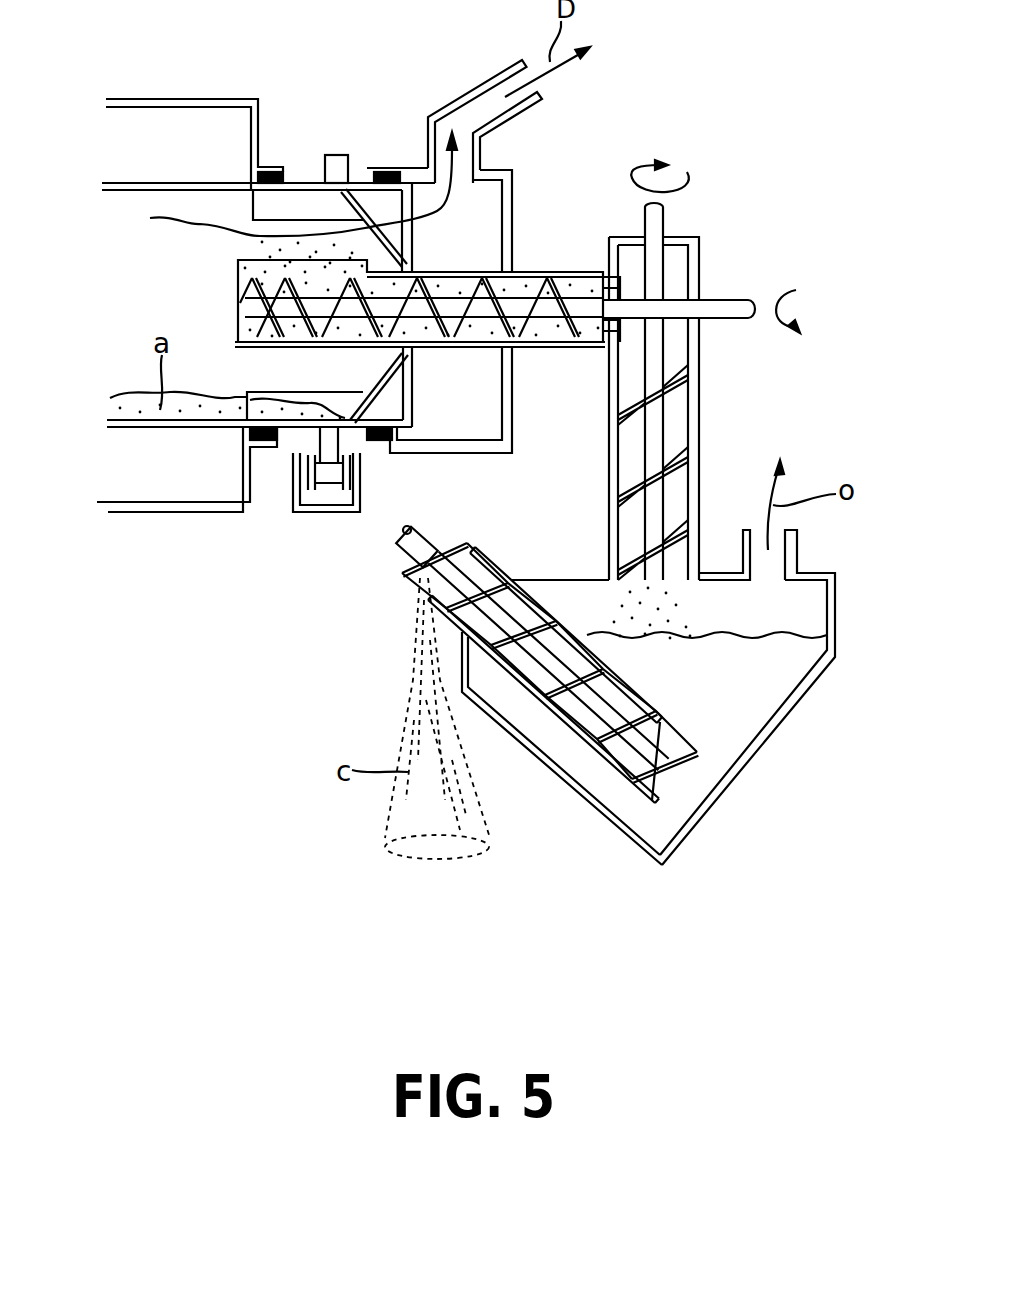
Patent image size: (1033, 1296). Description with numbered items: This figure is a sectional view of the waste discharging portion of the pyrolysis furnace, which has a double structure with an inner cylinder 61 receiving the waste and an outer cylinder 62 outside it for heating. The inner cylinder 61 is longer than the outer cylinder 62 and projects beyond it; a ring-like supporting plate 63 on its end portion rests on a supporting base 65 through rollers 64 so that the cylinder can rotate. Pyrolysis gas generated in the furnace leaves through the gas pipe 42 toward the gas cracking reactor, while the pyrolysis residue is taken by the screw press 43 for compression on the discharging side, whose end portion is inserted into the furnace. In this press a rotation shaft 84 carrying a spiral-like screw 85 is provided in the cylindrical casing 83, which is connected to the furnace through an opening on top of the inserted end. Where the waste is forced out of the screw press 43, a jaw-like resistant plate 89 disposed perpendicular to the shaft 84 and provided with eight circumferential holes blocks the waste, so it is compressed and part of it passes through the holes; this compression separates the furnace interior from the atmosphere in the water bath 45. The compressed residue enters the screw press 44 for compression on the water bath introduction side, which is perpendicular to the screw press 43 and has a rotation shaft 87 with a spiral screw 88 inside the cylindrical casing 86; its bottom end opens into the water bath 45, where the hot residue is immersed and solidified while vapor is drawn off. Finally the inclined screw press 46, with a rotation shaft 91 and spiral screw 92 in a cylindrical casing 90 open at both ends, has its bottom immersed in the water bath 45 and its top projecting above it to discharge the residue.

The gas pipe 42 is at (463, 95).
The screw press for compression on the discharging side 43 is at (547, 358).
The screw press for compression on the water bath introduction side 44 is at (713, 370).
The water bath 45 is at (813, 608).
The screw press for compression on the water bath discharging side 46 is at (547, 677).
The inner cylinder 61 is at (303, 183).
The outer cylinder 62 is at (188, 99).
The supporting plate 63 is at (337, 167).
The roller 64 is at (338, 473).
The supporting base 65 is at (305, 512).
The cylindrical casing 83 is at (565, 272).
The rotation shaft 84 is at (540, 305).
The spiral-like screw 85 is at (568, 344).
The cylindrical casing 86 is at (690, 442).
The rotation shaft 87 is at (657, 420).
The spiral screw 88 is at (660, 485).
The resistant plate 89 is at (603, 272).
The cylindrical casing 90 is at (525, 687).
The rotation shaft 91 is at (590, 695).
The spiral screw 92 is at (605, 773).